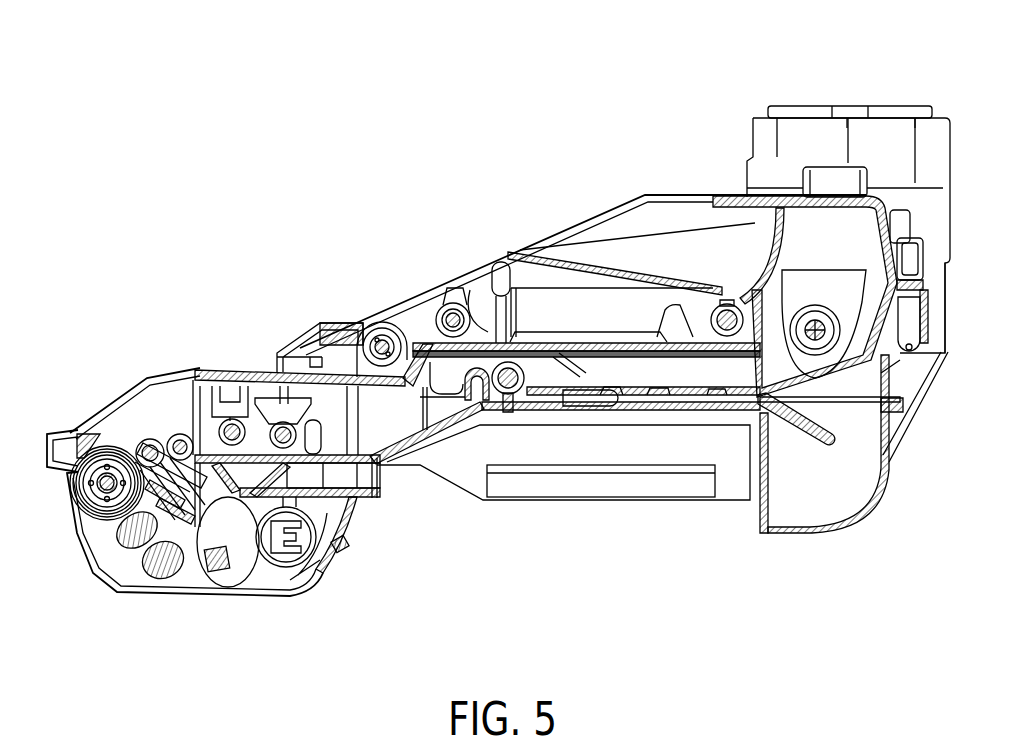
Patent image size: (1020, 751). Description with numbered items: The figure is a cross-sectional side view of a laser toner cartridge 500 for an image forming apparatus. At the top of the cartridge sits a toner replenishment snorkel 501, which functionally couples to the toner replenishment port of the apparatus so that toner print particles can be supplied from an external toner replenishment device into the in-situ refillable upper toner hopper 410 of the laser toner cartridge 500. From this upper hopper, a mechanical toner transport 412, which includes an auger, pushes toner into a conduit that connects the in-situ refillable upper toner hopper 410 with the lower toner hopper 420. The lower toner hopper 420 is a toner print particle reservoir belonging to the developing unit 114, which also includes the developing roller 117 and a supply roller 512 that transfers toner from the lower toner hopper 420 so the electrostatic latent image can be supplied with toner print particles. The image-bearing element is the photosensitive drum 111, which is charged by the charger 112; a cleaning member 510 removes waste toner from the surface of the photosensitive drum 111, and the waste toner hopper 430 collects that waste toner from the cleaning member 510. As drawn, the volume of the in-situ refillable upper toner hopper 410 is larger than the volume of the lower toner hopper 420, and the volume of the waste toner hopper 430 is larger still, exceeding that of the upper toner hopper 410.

The photosensitive drum 111 is at (103, 450).
The charger 112 is at (156, 428).
The developing unit 114 is at (233, 598).
The developing roller 117 is at (122, 540).
The in-situ refillable upper toner hopper 410 is at (583, 312).
The mechanical toner transport 412 is at (375, 327).
The lower toner hopper 420 is at (316, 483).
The waste toner hopper 430 is at (635, 390).
The laser toner cartridge 500 is at (557, 221).
The toner replenishment snorkel 501 is at (826, 105).
The cleaning member 510 is at (125, 425).
The supply roller 512 is at (160, 570).